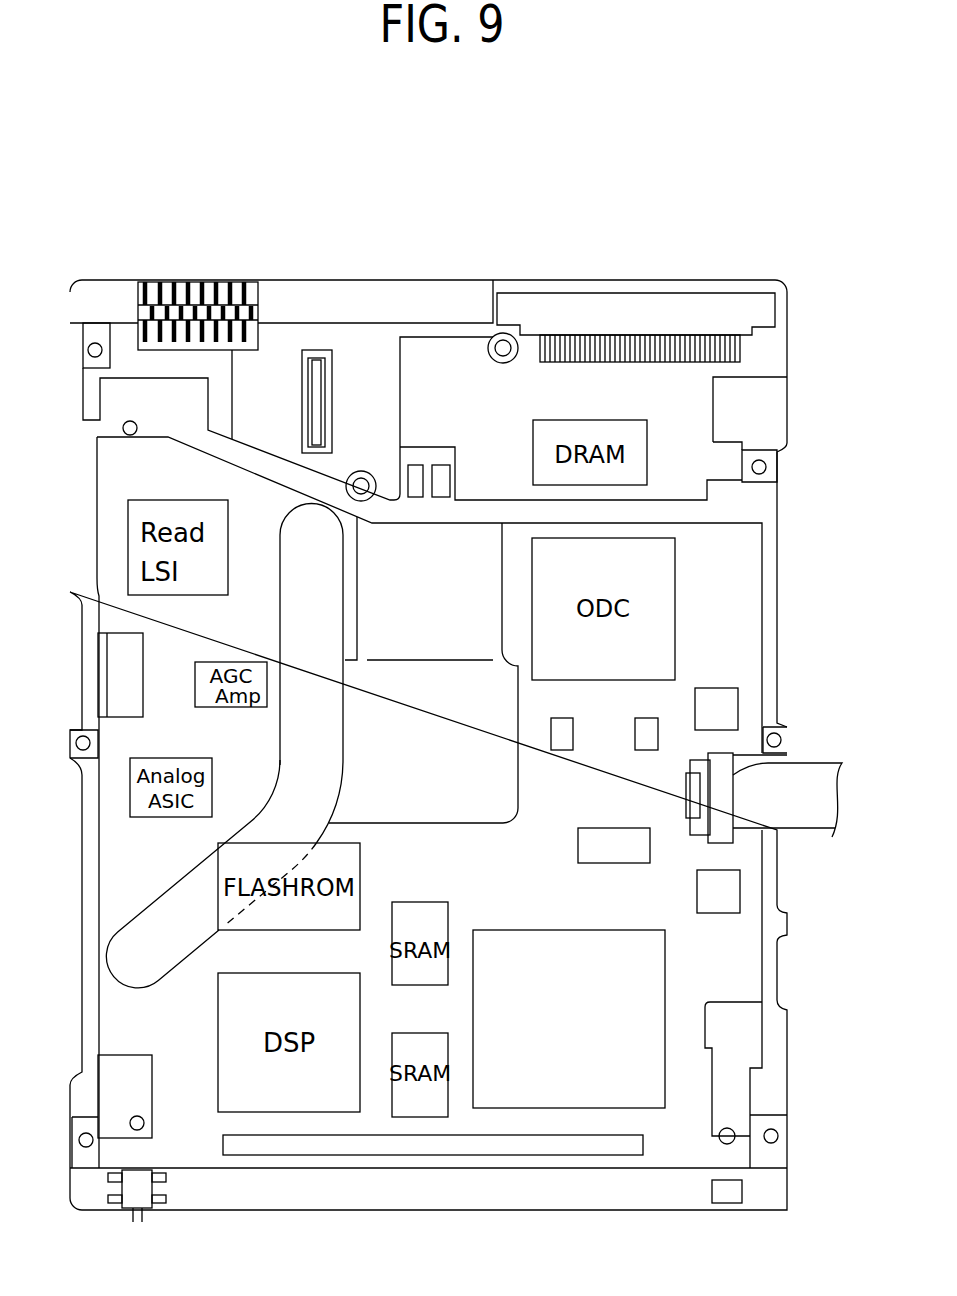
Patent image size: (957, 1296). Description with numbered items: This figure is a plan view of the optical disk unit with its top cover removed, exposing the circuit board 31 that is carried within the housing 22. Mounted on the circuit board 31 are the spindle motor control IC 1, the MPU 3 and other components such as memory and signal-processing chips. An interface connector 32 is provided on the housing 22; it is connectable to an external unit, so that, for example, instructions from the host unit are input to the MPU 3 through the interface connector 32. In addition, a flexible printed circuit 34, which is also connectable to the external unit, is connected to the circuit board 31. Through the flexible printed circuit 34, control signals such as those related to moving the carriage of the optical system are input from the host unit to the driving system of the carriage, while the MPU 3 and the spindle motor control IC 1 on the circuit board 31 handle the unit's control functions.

The spindle motor control IC 1 is at (650, 847).
The MPU 3 is at (500, 943).
The housing 22 is at (73, 917).
The circuit board 31 is at (682, 1147).
The interface connector 32 is at (767, 319).
The flexible printed circuit 34 is at (803, 775).